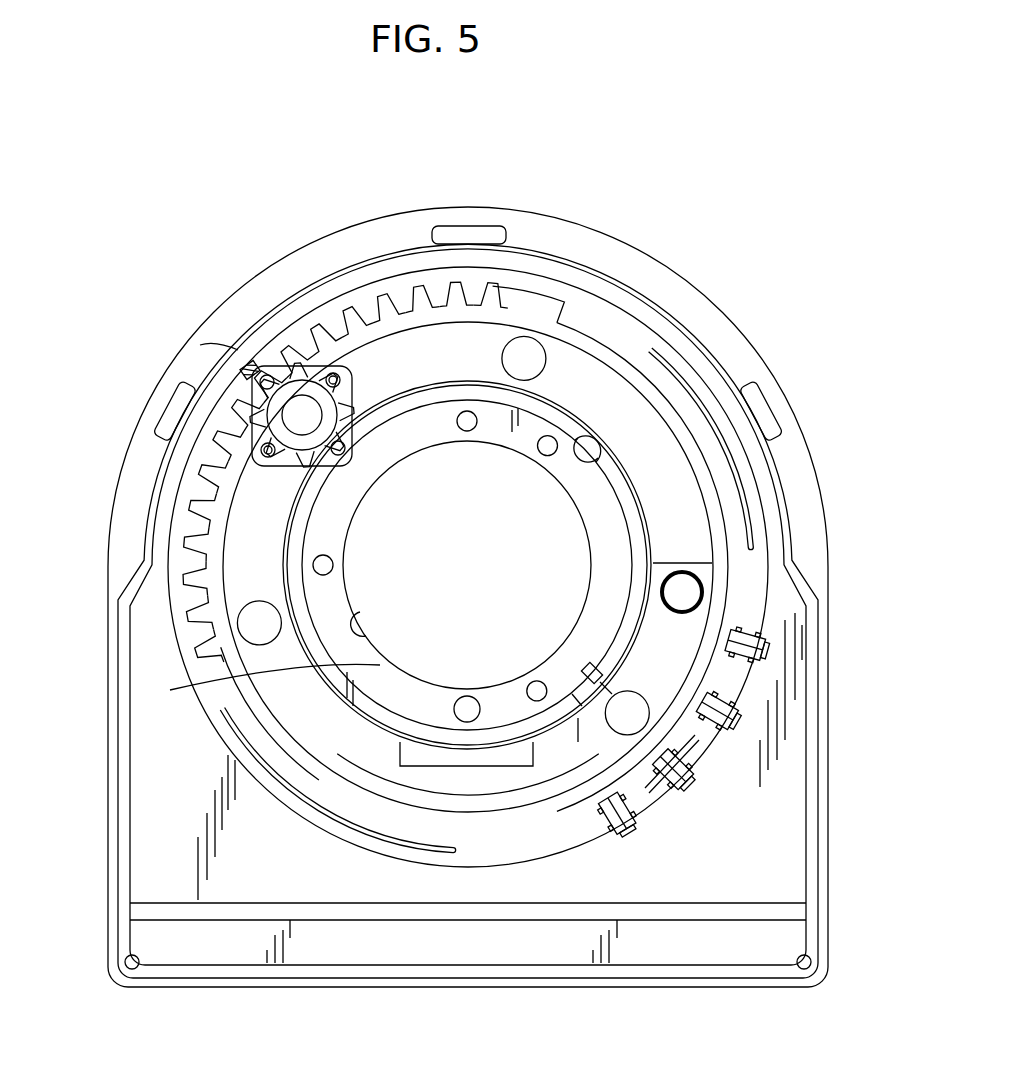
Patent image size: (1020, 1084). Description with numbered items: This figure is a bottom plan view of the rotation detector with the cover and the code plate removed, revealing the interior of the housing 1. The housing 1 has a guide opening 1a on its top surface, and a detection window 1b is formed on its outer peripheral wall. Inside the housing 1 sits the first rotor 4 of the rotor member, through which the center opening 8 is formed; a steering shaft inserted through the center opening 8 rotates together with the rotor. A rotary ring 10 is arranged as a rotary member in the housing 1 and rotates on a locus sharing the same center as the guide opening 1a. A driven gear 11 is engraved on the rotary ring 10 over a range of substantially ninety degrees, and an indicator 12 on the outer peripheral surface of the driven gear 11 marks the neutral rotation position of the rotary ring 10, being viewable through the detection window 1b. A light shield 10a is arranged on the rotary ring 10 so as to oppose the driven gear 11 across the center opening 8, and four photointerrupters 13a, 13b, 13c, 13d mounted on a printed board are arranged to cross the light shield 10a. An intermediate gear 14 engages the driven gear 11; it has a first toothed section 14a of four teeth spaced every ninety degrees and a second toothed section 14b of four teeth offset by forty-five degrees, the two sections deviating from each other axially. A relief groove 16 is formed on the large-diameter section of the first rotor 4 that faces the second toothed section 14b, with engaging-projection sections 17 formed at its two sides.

The housing 1 is at (122, 517).
The guide opening 1a is at (588, 450).
The detection window 1b is at (235, 350).
The first rotor 4 is at (612, 515).
The center opening 8 is at (265, 685).
The rotary ring 10 is at (522, 845).
The light shield 10a is at (662, 792).
The driven gear 11 is at (510, 287).
The indicator 12 is at (245, 362).
The photointerrupter 13a is at (770, 640).
The photointerrupter 13b is at (742, 720).
The photointerrupter 13c is at (697, 783).
The photointerrupter 13d is at (620, 832).
The intermediate gear 14 is at (302, 415).
The first toothed section 14a is at (345, 462).
The second toothed section 14b is at (340, 400).
The relief groove 16 is at (585, 678).
The engaging pin 17 is at (612, 690).